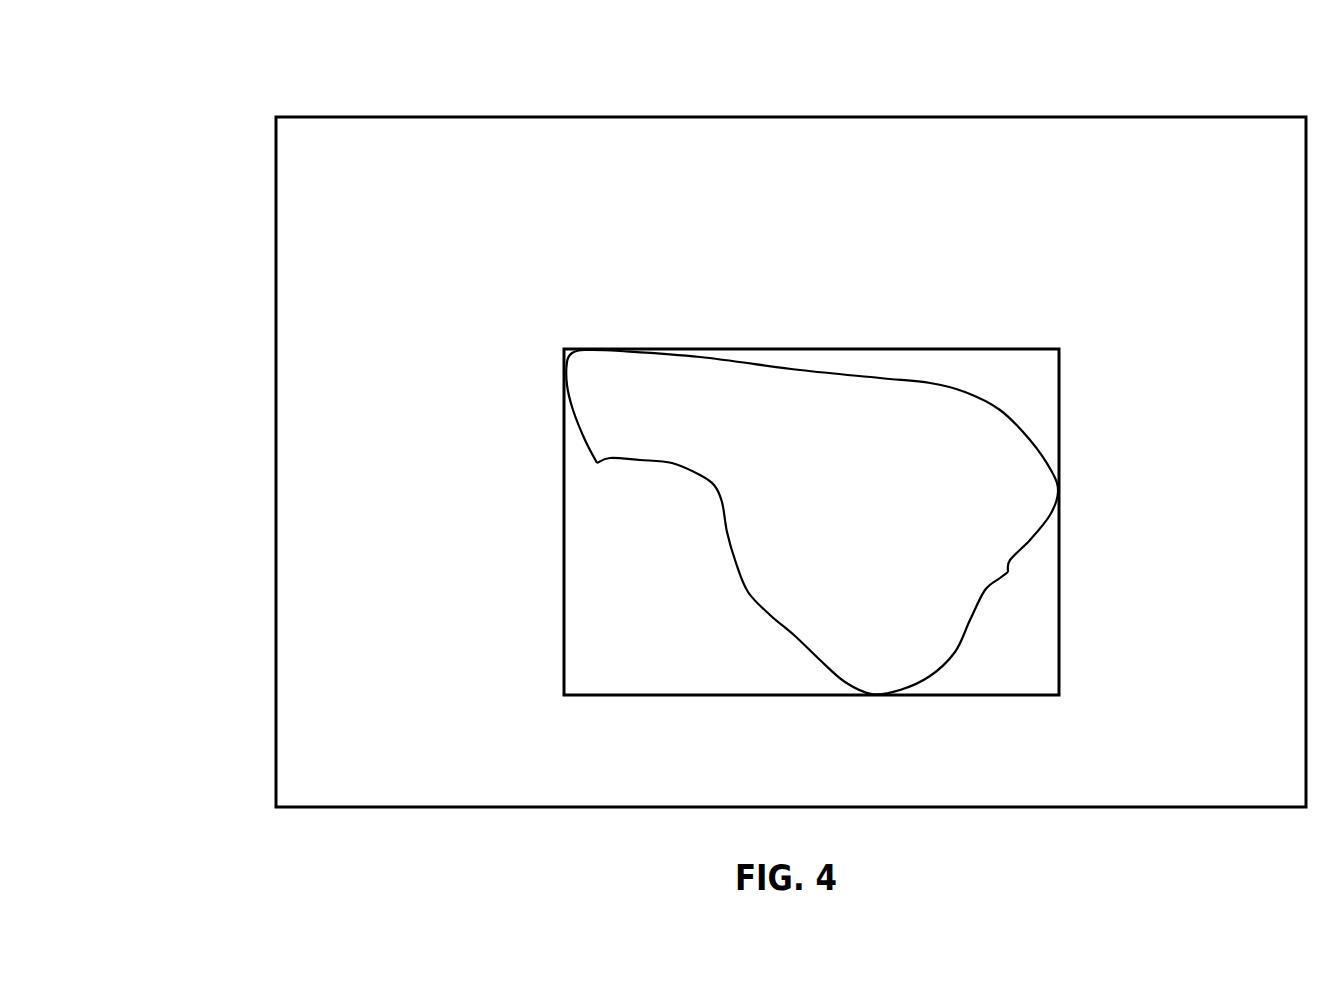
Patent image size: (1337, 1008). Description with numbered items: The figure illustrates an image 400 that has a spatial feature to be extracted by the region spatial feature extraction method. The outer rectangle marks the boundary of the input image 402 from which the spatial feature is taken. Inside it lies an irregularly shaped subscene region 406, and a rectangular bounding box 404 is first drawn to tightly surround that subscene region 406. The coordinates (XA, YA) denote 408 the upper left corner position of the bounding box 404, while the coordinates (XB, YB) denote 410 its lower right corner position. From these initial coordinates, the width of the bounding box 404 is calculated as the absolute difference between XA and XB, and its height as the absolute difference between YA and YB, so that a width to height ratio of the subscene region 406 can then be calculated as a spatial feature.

The image 400 is at (208, 62).
The input image 402 is at (627, 115).
The rectangular bounding box 404 is at (1033, 348).
The subscene region 406 is at (720, 507).
The upper left corner position 408 is at (537, 310).
The lower right corner position 410 is at (1120, 668).